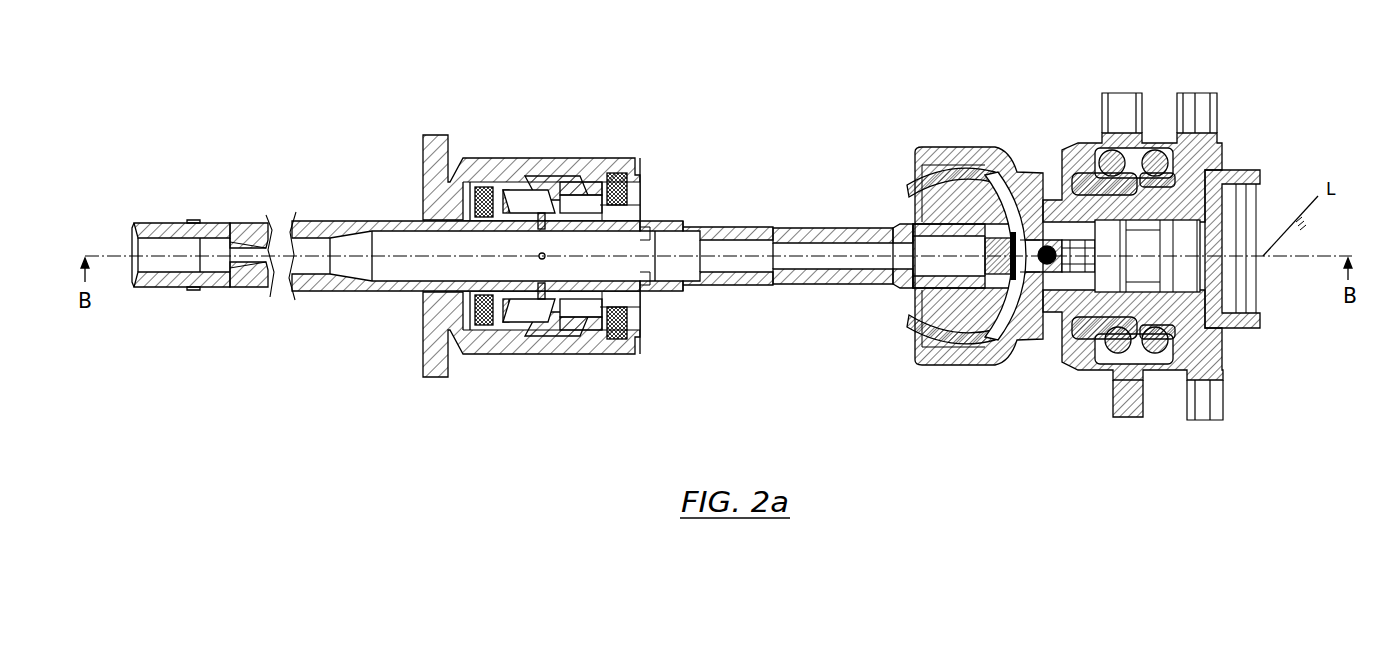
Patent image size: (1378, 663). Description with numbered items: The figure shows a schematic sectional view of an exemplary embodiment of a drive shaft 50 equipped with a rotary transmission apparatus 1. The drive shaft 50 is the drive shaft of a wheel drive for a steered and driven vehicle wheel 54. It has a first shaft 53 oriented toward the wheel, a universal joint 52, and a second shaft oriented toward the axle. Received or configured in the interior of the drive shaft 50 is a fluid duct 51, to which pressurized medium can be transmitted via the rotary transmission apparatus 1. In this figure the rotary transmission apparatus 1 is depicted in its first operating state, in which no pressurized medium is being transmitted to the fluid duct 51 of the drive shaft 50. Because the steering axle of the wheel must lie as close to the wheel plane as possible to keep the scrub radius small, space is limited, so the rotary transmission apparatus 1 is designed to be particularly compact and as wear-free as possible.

The drive shaft 50 is at (313, 65).
The rotary transmission apparatus 1 is at (650, 97).
The fluid duct 51 is at (430, 247).
The universal joint 52 is at (1038, 98).
The first shaft 53 is at (1220, 160).
The vehicle wheel 54 is at (1248, 68).